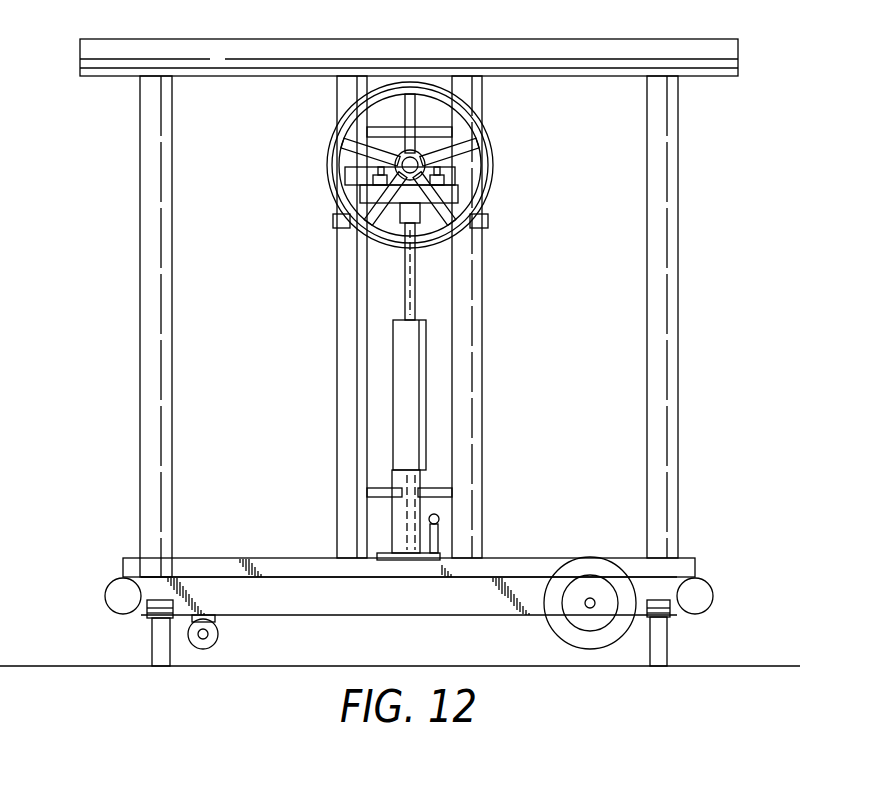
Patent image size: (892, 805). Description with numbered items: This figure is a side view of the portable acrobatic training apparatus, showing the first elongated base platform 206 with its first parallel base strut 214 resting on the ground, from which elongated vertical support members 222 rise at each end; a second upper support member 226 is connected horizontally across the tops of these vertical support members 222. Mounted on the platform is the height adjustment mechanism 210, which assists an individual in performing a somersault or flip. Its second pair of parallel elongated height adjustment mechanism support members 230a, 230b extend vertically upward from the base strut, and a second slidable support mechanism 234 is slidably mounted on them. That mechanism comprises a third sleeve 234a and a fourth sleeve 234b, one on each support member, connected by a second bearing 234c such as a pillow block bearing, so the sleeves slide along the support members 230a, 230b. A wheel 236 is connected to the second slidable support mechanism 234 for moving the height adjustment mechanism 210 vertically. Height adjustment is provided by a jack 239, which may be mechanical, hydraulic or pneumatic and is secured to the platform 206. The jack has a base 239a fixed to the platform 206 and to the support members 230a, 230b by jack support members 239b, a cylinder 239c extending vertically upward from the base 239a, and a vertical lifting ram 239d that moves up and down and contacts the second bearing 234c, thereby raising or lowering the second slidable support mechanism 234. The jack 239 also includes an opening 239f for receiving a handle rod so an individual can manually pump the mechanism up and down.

The first elongated base platform 206 is at (422, 567).
The height adjustment mechanism 210 is at (498, 238).
The first parallel base strut 214 is at (280, 597).
The elongated vertical support members 222 is at (153, 345).
The second upper support member 226 is at (597, 38).
The elongated height adjustment mechanism support member 230a is at (348, 378).
The elongated height adjustment mechanism support member 230b is at (473, 388).
The second slidable support mechanism 234 is at (417, 207).
The third sleeve 234a is at (335, 218).
The fourth sleeve 234b is at (516, 219).
The second bearing 234c is at (372, 193).
The wheel 236 is at (477, 126).
The jack 239 is at (406, 443).
The base 239a is at (397, 520).
The jack support members 239b is at (378, 490).
The cylinder 239c is at (415, 358).
The vertical lifting ram 239d is at (405, 278).
The opening 239f is at (499, 533).